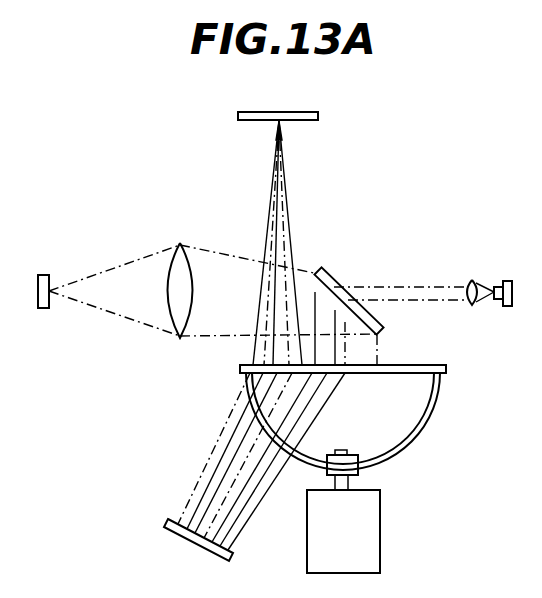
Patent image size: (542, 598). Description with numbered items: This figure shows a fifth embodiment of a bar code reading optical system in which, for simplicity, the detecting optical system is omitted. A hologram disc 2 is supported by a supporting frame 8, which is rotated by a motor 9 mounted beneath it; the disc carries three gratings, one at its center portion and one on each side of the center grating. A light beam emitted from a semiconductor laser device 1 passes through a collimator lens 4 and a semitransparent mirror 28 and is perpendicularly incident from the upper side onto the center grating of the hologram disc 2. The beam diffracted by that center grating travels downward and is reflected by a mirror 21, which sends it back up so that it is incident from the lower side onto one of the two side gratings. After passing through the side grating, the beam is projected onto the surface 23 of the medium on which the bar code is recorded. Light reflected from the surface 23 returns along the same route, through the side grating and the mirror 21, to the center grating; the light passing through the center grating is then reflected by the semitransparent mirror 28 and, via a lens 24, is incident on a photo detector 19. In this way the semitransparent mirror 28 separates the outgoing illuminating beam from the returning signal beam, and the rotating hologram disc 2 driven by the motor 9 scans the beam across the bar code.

The semiconductor laser device 1 is at (508, 280).
The hologram disc 2 is at (416, 364).
The collimator lens 4 is at (469, 284).
The supporting frame 8 is at (433, 409).
The motor 9 is at (380, 546).
The photo detector 19 is at (44, 274).
The mirror 21 is at (176, 530).
The surface of the medium 23 is at (248, 112).
The lens 24 is at (169, 262).
The semitransparent mirror 28 is at (326, 265).